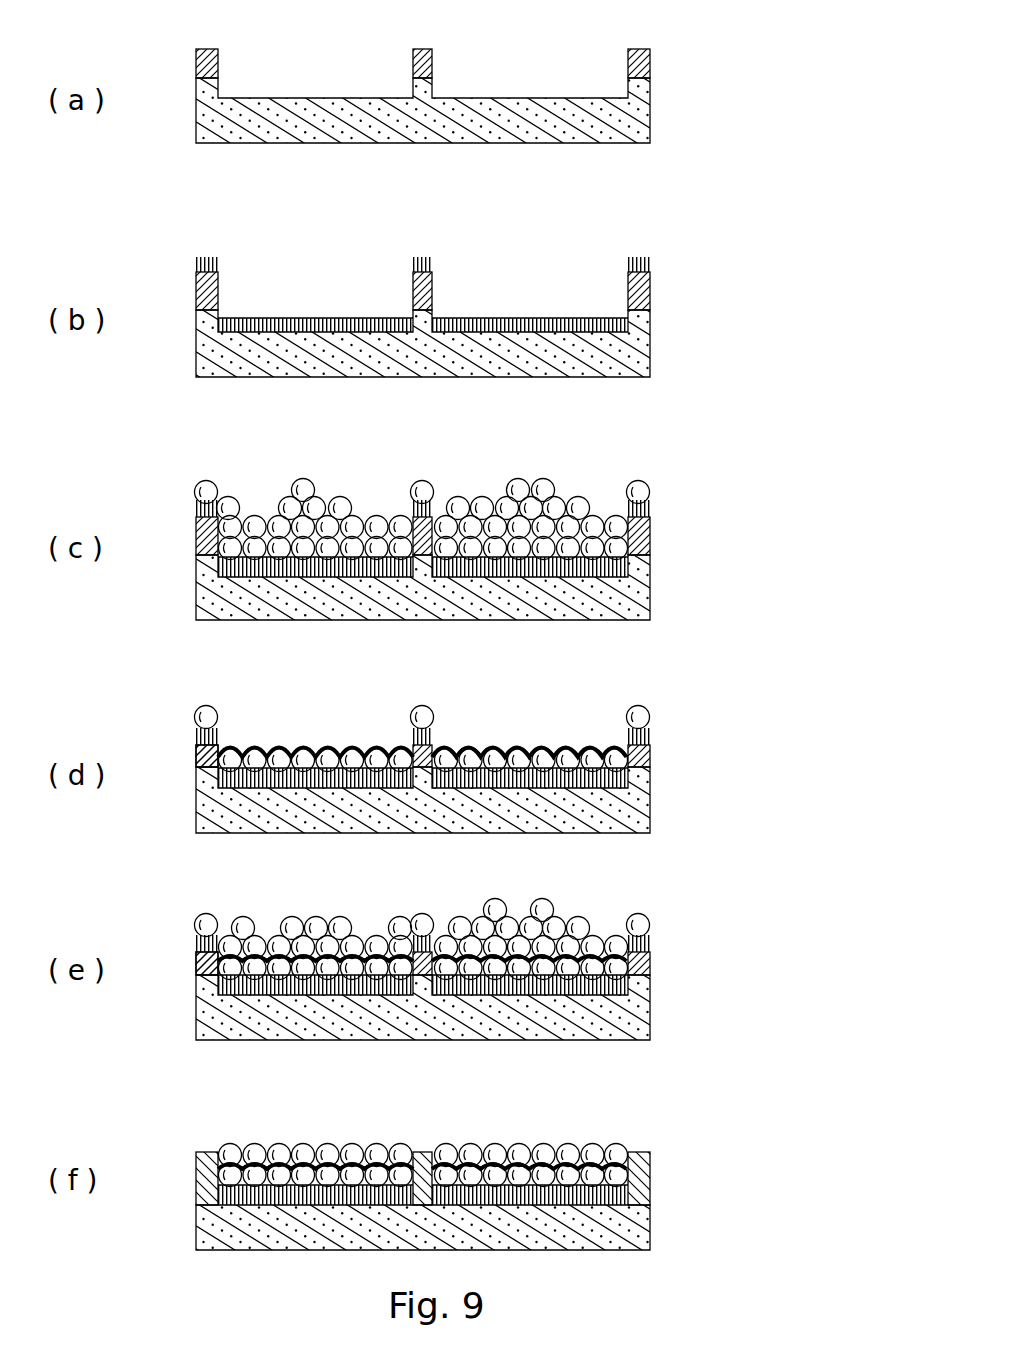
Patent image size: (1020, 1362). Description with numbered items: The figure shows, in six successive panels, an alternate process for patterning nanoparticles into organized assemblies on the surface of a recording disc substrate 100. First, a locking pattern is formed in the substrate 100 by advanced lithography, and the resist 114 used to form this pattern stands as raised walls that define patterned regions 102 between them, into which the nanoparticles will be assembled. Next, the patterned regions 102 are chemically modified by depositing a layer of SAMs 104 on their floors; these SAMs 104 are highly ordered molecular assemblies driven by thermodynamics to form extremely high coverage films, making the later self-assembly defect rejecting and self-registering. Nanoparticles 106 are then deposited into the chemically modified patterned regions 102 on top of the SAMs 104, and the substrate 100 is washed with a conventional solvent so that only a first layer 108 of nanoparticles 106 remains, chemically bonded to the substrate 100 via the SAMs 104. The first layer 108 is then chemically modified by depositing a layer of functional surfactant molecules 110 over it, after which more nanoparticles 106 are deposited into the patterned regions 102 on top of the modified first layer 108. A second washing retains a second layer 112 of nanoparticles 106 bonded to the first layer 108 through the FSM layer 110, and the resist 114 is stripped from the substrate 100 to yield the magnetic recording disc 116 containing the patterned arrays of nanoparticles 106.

The recording disc substrate 100 is at (650, 118).
The patterned regions 102 is at (295, 50).
The layer of SAMs 104 is at (370, 318).
The nanoparticles 106 is at (256, 514).
The first layer 108 is at (203, 757).
The layer of functional surfactant molecules 110 is at (348, 746).
The second layer 112 is at (644, 1158).
The resist 114 is at (650, 64).
The magnetic recording disc 116 is at (697, 1215).